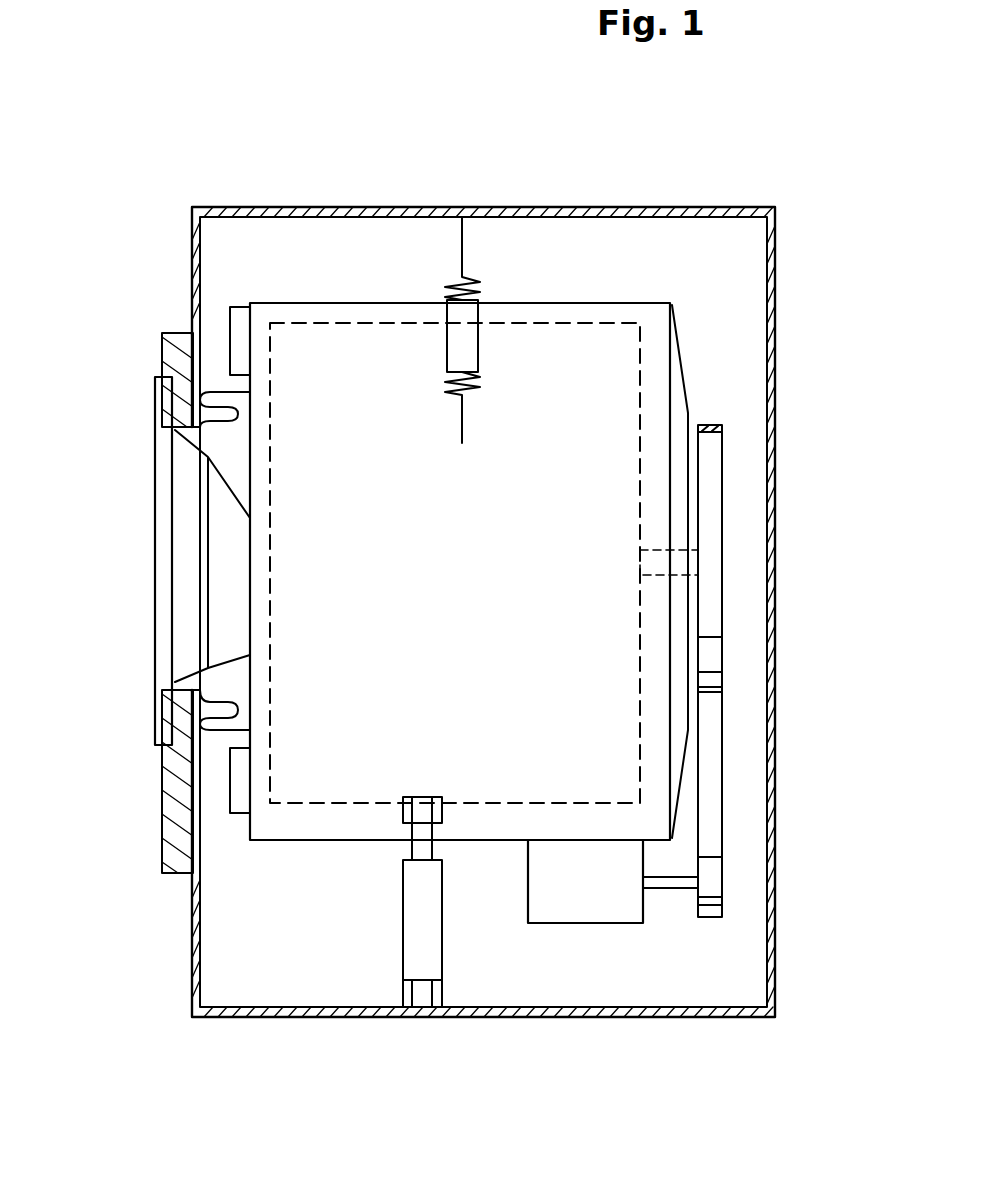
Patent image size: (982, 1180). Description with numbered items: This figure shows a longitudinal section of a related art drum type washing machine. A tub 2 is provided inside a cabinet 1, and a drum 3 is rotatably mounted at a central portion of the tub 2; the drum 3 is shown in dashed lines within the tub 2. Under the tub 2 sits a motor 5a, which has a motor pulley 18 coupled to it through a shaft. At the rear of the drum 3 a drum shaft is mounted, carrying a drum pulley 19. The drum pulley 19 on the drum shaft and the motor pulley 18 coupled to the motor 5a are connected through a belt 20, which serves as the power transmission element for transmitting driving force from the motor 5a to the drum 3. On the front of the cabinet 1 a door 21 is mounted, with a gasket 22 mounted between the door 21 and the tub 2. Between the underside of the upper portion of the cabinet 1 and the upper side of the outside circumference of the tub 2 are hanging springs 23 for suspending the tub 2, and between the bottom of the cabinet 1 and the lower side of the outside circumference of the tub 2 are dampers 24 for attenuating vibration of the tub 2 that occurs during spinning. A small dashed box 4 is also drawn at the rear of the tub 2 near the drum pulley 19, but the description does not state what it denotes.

The cabinet 1 is at (272, 207).
The tub 2 is at (598, 303).
The drum 3 is at (367, 322).
The sensor 4 is at (695, 562).
The motor 5a is at (582, 905).
The motor pulley 18 is at (712, 878).
The drum pulley 19 is at (712, 513).
The belt 20 is at (712, 782).
The door 21 is at (166, 560).
The gasket 22 is at (218, 737).
The hanging springs 23 is at (477, 282).
The dampers 24 is at (413, 938).